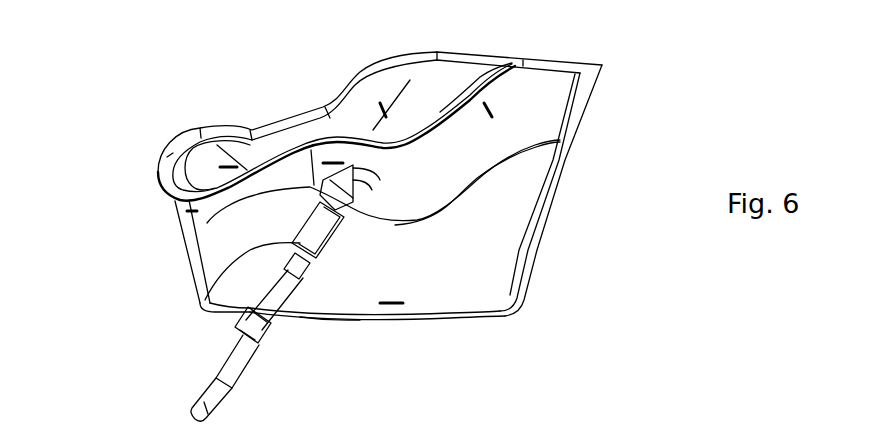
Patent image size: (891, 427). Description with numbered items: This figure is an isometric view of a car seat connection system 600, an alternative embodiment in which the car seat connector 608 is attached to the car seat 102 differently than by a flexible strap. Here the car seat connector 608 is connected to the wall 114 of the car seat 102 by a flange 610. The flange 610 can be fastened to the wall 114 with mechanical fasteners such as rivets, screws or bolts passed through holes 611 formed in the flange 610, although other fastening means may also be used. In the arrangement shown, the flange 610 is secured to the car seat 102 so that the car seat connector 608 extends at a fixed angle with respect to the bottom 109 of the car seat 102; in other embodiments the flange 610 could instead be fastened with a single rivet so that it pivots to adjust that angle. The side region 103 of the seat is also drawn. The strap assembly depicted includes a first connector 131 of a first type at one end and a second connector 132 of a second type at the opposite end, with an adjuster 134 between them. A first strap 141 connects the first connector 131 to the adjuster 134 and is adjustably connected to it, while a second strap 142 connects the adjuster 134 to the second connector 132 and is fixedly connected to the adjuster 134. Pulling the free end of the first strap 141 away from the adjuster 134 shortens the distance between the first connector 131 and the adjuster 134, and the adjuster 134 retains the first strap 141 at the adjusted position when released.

The car seat connection system 600 is at (687, 78).
The car seat 102 is at (548, 57).
The seat base side wall 103 is at (495, 253).
The bottom 109 is at (450, 318).
The wall 114 is at (422, 200).
The first connector 131 is at (258, 292).
The second connector 132 is at (200, 394).
The adjuster 134 is at (268, 338).
The first strap 141 is at (330, 322).
The second strap 142 is at (247, 366).
The car seat connector 608 is at (266, 176).
The flange 610 is at (180, 229).
The holes 611 is at (329, 179).